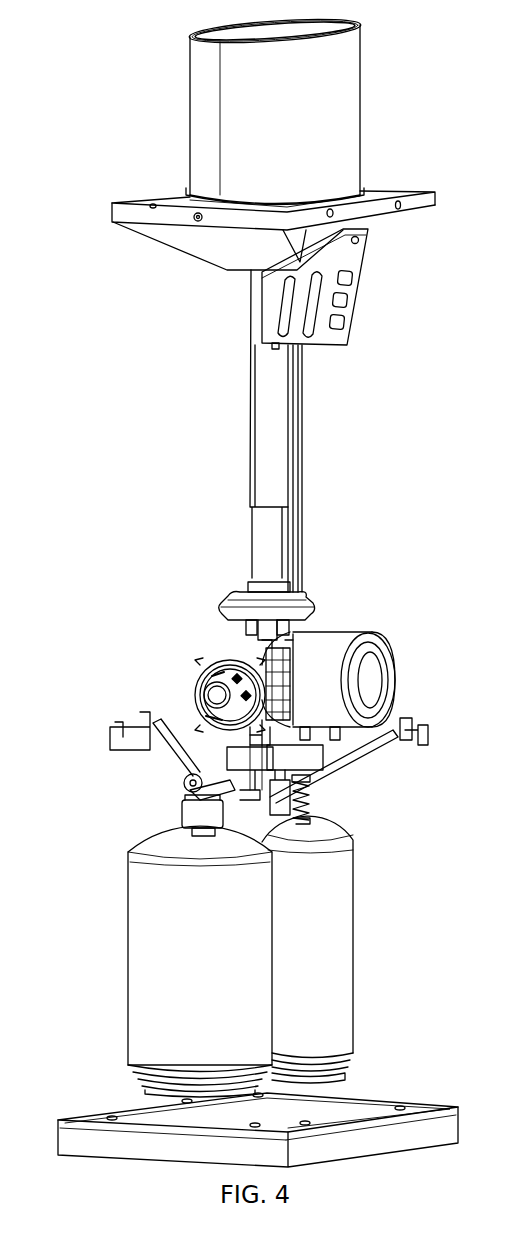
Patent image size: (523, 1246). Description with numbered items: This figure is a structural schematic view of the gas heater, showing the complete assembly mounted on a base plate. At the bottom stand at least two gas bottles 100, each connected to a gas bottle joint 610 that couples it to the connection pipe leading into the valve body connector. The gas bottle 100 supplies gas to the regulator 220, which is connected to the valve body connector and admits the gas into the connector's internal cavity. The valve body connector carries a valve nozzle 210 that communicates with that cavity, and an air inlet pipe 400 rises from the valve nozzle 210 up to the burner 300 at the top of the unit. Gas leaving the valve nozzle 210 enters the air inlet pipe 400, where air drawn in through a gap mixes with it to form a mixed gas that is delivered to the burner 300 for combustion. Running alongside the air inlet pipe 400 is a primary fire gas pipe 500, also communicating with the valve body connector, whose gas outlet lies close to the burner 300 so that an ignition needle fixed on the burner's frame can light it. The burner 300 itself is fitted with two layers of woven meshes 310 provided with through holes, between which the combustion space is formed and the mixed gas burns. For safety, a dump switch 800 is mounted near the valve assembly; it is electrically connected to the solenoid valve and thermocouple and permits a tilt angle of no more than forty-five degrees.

The gas bottle 100 is at (340, 946).
The valve nozzle 210 is at (243, 638).
The regulator 220 is at (178, 668).
The burner 300 is at (143, 121).
The woven meshes 310 is at (327, 111).
The air inlet pipe 400 is at (260, 462).
The primary fire gas pipe 500 is at (302, 473).
The gas bottle joint 610 is at (183, 807).
The dump switch 800 is at (310, 803).